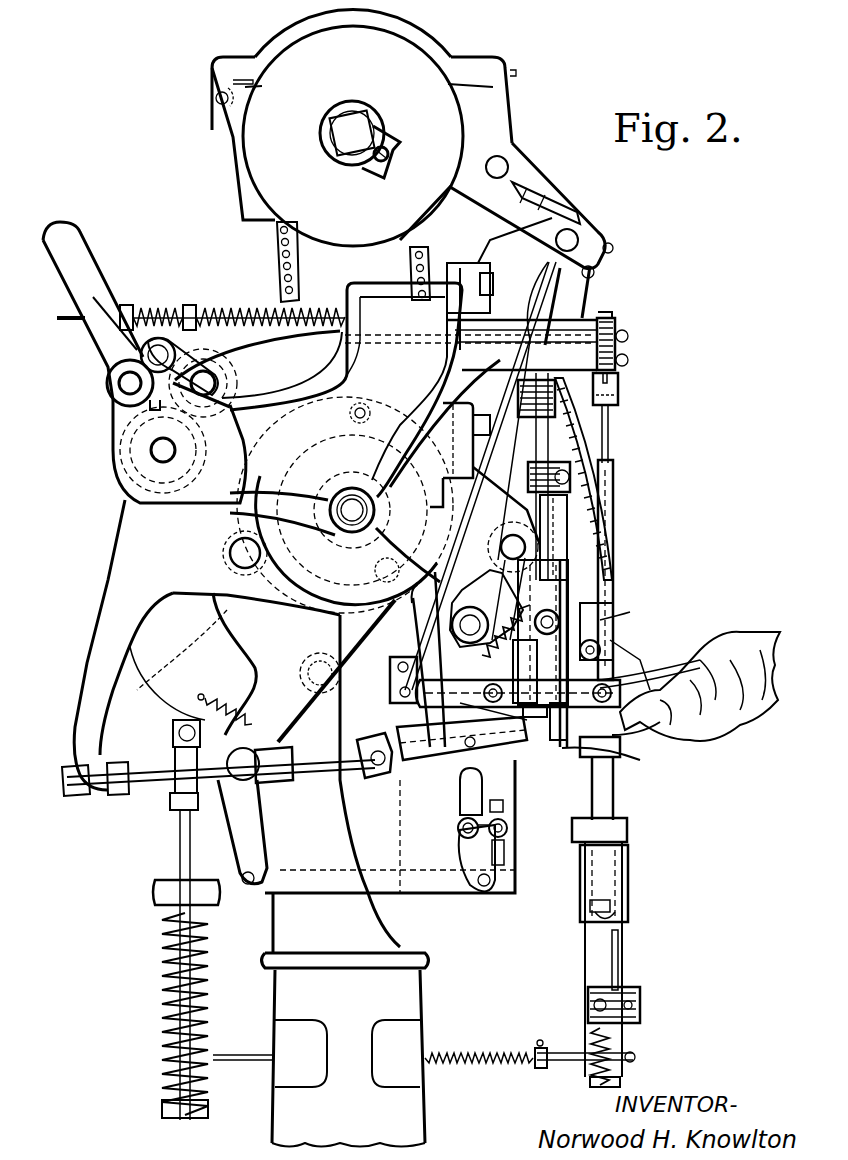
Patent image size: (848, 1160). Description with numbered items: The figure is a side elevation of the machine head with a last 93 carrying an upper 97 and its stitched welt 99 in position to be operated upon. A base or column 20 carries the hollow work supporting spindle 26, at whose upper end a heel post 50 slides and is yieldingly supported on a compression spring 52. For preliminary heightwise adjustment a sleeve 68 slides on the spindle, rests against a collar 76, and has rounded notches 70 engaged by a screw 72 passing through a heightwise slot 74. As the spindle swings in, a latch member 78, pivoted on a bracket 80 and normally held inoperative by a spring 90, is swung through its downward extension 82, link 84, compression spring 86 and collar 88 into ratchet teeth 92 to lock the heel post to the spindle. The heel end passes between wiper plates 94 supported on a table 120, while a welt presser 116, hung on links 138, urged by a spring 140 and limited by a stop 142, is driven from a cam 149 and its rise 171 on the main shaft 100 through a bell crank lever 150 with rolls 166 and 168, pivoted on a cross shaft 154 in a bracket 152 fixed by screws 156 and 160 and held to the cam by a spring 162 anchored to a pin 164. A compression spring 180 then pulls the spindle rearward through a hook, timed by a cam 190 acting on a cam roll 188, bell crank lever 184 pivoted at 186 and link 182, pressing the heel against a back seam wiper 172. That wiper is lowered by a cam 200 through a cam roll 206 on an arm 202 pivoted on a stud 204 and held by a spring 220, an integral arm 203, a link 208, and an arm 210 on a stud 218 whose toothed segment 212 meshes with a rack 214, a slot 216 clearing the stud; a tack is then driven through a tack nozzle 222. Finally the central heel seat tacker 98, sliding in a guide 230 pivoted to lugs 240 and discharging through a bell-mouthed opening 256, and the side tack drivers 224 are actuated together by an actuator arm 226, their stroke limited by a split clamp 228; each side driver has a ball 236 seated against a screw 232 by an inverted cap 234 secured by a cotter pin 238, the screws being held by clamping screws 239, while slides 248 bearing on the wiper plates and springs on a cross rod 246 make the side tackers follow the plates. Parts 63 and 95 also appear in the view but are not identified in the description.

The base or column 20 is at (425, 1122).
The hollow work supporting spindle 26 is at (590, 960).
The heel post 50 is at (615, 790).
The compression spring 52 is at (595, 1087).
The knife edge 63 is at (638, 660).
The sleeve 68 is at (630, 862).
The rounded notches 70 is at (612, 912).
The screw 72 is at (615, 905).
The slot 74 is at (618, 880).
The collar 76 is at (627, 826).
The latch member 78 is at (622, 985).
The bracket 80 is at (642, 1012).
The downward extension 82 is at (625, 1038).
The link 84 is at (565, 1052).
The compression spring 86 is at (465, 1053).
The collar 88 is at (540, 1068).
The compression spring 90 is at (642, 995).
The ratchet teeth 92 is at (620, 953).
The last 93 is at (650, 715).
The wiper plates 94 is at (645, 660).
The hand 95 is at (635, 672).
The upper 97 is at (668, 730).
The central heel seat tacker 98 is at (608, 452).
The welt 99 is at (645, 700).
The main shaft 100 is at (343, 520).
The welt presser 116 is at (590, 683).
The table 120 is at (612, 693).
The links 138 is at (397, 694).
The spring 140 is at (540, 612).
The stop 142 is at (538, 718).
The cam 149 is at (338, 640).
The bell crank lever 150 is at (510, 610).
The bracket 152 is at (540, 560).
The cross shaft 154 is at (569, 535).
The screws 156 is at (483, 418).
The screws 160 is at (530, 750).
The spring 162 is at (510, 537).
The pin 164 is at (490, 452).
The roll 166 is at (423, 603).
The roll 168 is at (445, 644).
The rise of the cam 171 is at (462, 412).
The back seam wiper 172 is at (600, 747).
The compression spring 180 is at (168, 1040).
The link 182 is at (175, 1118).
The bell crank lever 184 is at (250, 635).
The pivot 186 is at (300, 677).
The cam roll 188 is at (236, 566).
The cam 190 is at (215, 400).
The cam 200 is at (230, 505).
The arm 202 is at (278, 735).
The arm 203 is at (250, 850).
The stud 204 is at (270, 770).
The cam roll 206 is at (375, 560).
The link 208 is at (390, 890).
The arm 210 is at (450, 850).
The toothed segment 212 is at (480, 822).
The rack 214 is at (497, 815).
The slot 216 is at (466, 780).
The stud 218 is at (456, 826).
The spring 220 is at (185, 720).
The tack nozzle 222 is at (568, 740).
The tack drivers 224 is at (616, 580).
The actuator arm 226 is at (618, 335).
The split clamp 228 is at (572, 482).
The guide 230 is at (612, 556).
The screws 232 is at (612, 314).
The inverted caps 234 is at (618, 392).
The ball 236 is at (618, 405).
The cotter pin 238 is at (610, 378).
The clamping screws 239 is at (628, 360).
The lugs 240 is at (600, 600).
The cross rod 246 is at (620, 625).
The slides 248 is at (600, 648).
The bell-mouthed opening 256 is at (545, 692).